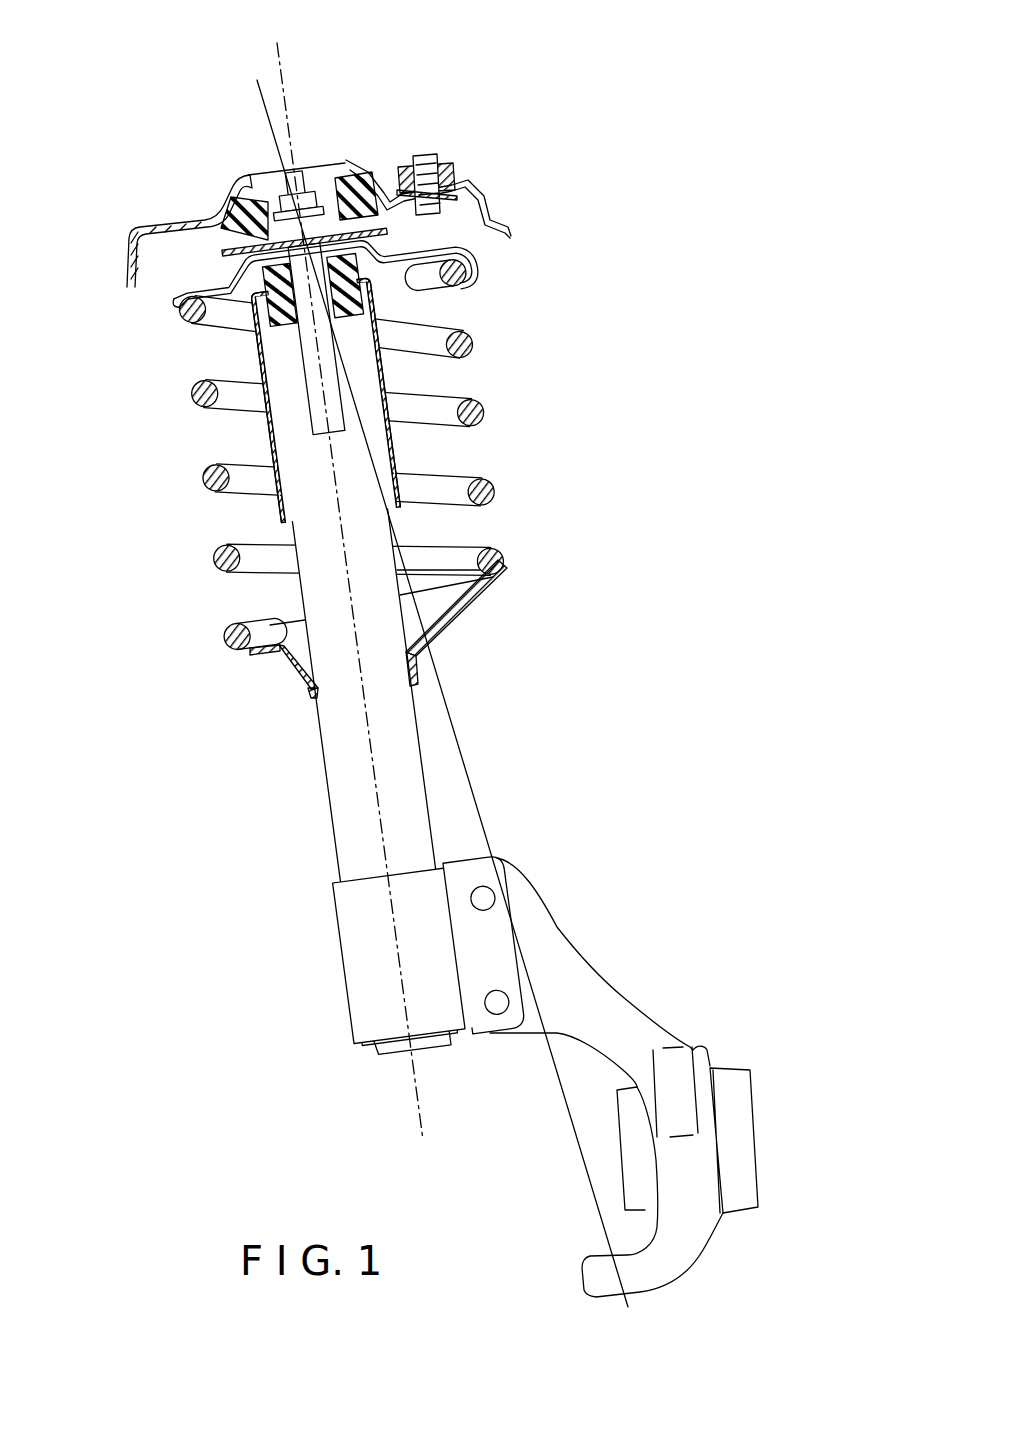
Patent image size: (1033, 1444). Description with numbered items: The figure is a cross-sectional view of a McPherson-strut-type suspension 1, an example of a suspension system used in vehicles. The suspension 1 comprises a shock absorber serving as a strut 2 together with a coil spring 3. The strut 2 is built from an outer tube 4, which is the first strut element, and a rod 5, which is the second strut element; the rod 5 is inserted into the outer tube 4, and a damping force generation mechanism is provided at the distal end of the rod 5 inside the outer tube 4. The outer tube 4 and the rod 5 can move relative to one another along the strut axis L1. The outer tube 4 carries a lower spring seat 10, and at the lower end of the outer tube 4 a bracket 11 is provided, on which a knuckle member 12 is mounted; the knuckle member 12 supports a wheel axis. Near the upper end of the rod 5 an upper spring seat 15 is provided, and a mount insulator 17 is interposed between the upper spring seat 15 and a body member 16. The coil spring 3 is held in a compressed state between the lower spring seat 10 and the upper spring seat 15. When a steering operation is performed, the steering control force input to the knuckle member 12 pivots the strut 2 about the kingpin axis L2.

The McPherson-strut-type suspension 1 is at (500, 79).
The strut 2 is at (298, 583).
The coil spring 3 is at (490, 416).
The outer tube 4 is at (340, 745).
The rod 5 is at (302, 370).
The lower spring seat 10 is at (447, 628).
The bracket 11 is at (500, 945).
The knuckle member 12 is at (665, 1024).
The upper spring seat 15 is at (405, 262).
The body member 16 is at (462, 199).
The mount insulator 17 is at (240, 193).
The axis L1 is at (378, 817).
The kingpin axis L2 is at (466, 762).